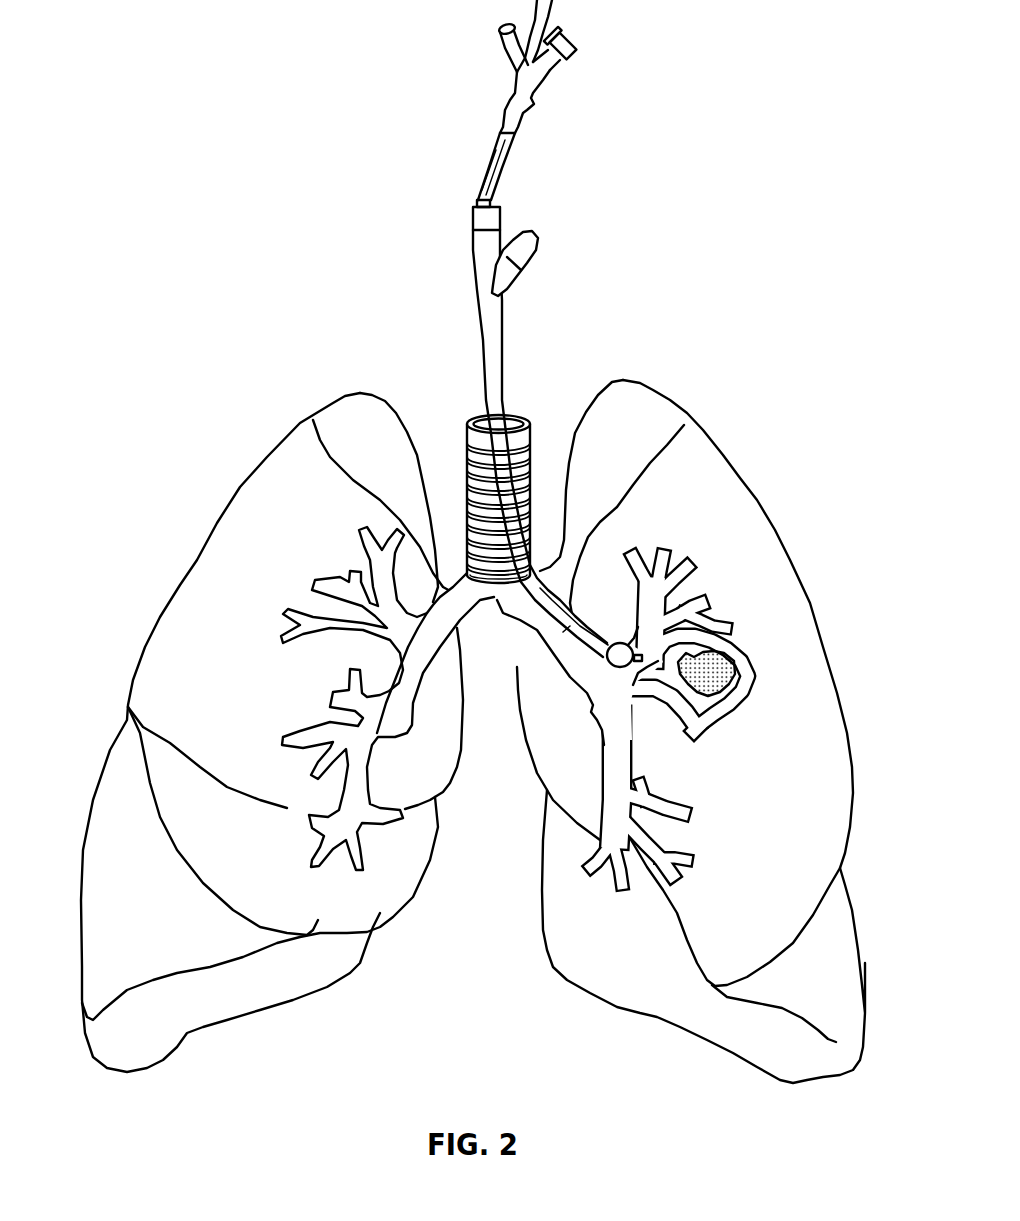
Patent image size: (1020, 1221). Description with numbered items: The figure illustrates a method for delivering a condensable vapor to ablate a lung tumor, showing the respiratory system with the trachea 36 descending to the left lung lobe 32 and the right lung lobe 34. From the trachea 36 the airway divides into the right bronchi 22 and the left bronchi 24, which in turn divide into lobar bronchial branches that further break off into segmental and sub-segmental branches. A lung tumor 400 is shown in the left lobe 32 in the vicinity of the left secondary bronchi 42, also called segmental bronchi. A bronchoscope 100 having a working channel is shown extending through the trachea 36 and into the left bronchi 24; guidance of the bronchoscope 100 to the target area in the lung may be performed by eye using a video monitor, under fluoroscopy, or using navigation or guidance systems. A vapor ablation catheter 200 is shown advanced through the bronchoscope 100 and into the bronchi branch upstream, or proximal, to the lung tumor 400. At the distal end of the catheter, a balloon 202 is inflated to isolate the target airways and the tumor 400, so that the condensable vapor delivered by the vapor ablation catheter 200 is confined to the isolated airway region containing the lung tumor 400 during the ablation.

The right bronchi 22 is at (313, 420).
The left bronchi 24 is at (684, 425).
The left lung lobe 32 is at (790, 440).
The right lung lobe 34 is at (124, 578).
The trachea 36 is at (465, 417).
The left secondary bronchi 42 is at (710, 697).
The bronchoscope 100 is at (517, 285).
The vapor ablation catheter 200 is at (532, 100).
The balloon 202 is at (630, 665).
The lung tumor 400 is at (740, 660).